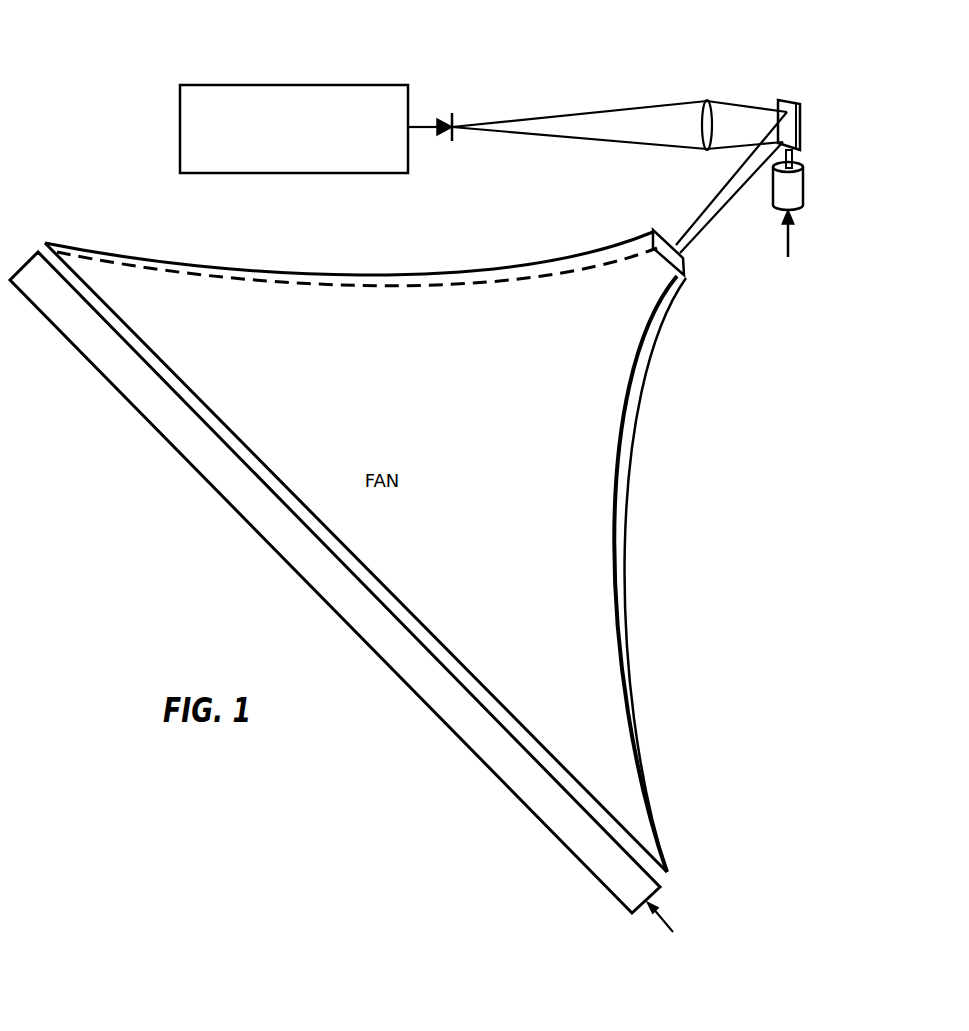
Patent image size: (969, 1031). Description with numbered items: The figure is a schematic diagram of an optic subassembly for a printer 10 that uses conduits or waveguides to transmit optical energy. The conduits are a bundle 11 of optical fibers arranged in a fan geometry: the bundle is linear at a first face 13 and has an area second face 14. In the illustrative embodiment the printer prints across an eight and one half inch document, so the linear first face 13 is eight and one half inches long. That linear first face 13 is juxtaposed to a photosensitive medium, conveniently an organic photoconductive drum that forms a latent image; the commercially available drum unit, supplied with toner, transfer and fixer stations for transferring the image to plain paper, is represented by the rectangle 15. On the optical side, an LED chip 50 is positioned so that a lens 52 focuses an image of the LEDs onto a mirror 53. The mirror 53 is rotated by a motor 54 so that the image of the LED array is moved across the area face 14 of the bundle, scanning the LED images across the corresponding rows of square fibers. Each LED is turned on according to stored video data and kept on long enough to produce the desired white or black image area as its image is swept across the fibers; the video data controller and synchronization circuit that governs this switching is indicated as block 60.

The printer 10 is at (754, 543).
The bundle of optical fibers 11 is at (631, 616).
The first face 13 is at (597, 785).
The area second face 14 is at (689, 243).
The rectangle representing photosensitive medium apparatus 15 is at (481, 758).
The LED chip 50 is at (454, 137).
The lens 52 is at (701, 136).
The mirror 53 is at (805, 130).
The motor 54 is at (806, 187).
The video data controller and synchronization circuit 60 is at (275, 85).